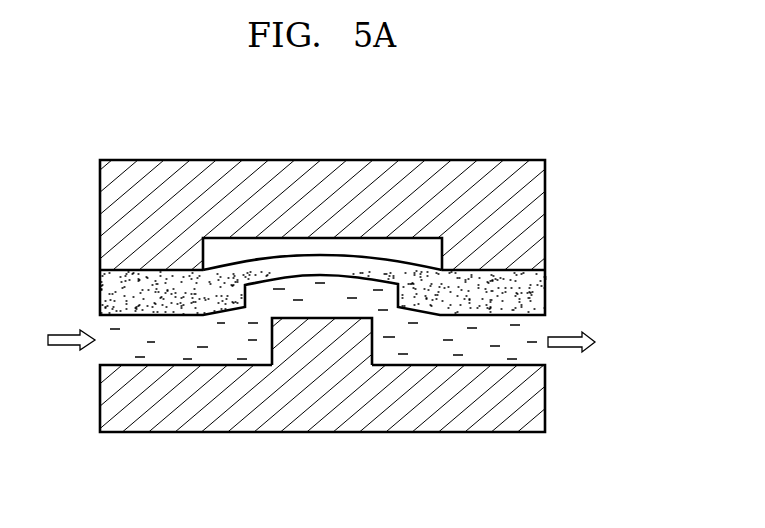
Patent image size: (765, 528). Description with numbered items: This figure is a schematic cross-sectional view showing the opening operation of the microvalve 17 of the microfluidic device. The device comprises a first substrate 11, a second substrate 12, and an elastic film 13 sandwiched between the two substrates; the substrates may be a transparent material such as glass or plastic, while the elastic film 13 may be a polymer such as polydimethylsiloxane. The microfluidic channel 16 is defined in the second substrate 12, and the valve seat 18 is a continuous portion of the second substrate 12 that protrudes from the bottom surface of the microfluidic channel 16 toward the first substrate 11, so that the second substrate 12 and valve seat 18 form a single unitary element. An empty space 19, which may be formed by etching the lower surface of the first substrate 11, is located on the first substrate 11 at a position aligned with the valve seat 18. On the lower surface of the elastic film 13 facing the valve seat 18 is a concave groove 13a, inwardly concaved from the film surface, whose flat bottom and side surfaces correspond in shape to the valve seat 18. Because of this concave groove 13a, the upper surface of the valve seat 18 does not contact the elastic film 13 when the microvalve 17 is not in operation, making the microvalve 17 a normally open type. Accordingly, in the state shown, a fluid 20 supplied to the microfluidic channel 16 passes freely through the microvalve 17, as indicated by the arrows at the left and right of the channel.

The first substrate 11 is at (545, 216).
The second substrate 12 is at (545, 400).
The elastic film 13 is at (545, 294).
The concave groove 13a is at (364, 280).
The microfluidic channel 16 is at (118, 350).
The microvalve 17 is at (343, 211).
The valve seat 18 is at (373, 343).
The empty space 19 is at (411, 250).
The fluid 20 is at (167, 332).